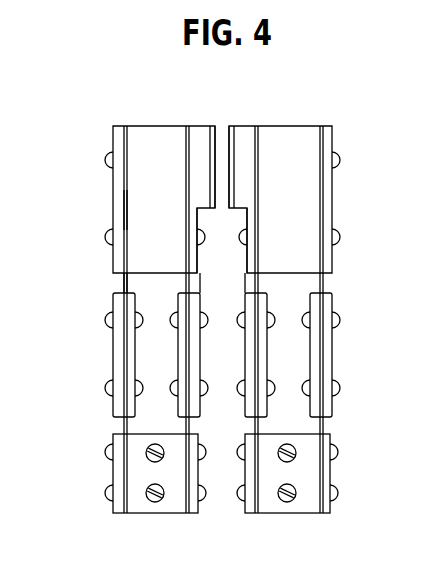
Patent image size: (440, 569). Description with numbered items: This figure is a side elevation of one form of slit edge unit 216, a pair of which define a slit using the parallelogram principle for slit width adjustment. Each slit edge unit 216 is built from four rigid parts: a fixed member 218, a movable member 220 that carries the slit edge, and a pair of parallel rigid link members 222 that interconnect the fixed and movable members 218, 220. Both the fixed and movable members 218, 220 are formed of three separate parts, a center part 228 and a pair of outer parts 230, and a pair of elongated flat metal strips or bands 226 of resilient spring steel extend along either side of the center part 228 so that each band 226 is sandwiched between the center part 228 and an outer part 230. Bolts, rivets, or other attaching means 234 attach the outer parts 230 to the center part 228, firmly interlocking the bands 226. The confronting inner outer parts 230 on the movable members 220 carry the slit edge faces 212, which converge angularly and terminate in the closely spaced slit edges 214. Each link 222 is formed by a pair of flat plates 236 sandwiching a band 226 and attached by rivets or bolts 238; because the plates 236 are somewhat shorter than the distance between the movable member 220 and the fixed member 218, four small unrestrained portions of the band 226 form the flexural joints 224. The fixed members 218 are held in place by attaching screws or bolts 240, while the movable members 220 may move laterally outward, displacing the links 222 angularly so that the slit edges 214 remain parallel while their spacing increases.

The angularly converging faces 212 is at (232, 181).
The slit edges 214 is at (232, 144).
The slit edge unit 216 is at (91, 317).
The fixed member 218 is at (160, 519).
The movable member 220 is at (157, 123).
The link members 222 is at (101, 373).
The flexural joint 224 is at (126, 282).
The flat metal strips or bands 226 is at (127, 210).
The center part 228 is at (302, 142).
The outer parts 230 is at (248, 140).
The attaching means 234 is at (338, 160).
The flat plates 236 is at (330, 364).
The rivets or bolts 238 is at (341, 320).
The attaching screws or bolts 240 is at (150, 492).